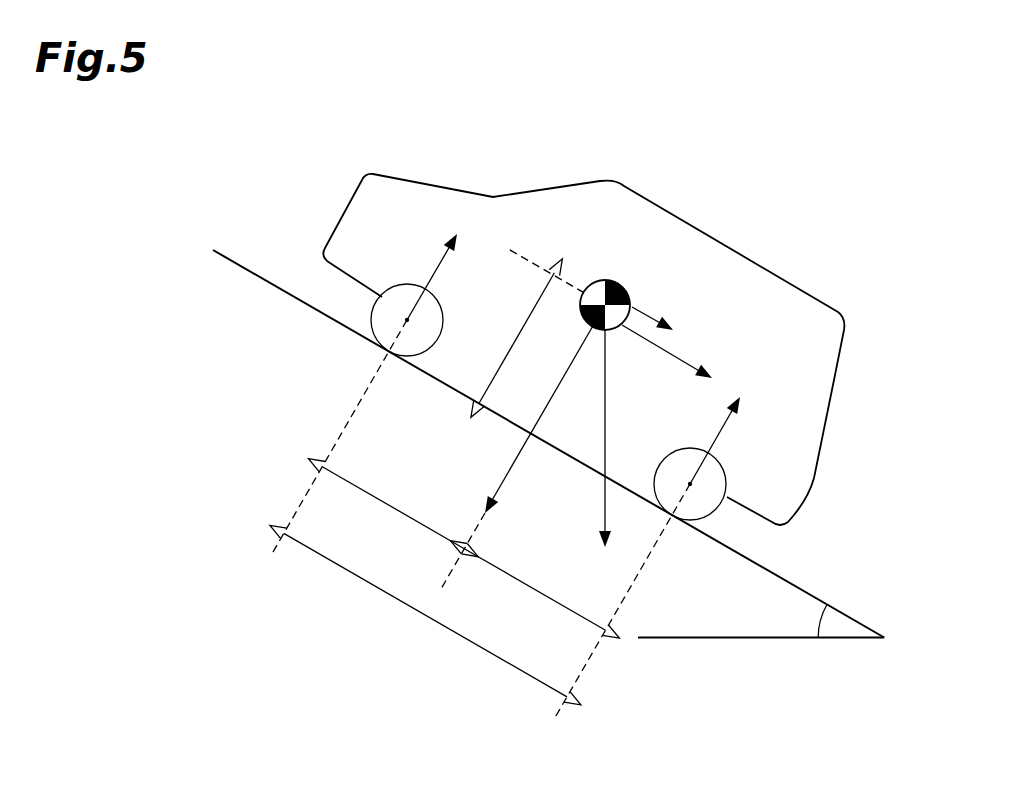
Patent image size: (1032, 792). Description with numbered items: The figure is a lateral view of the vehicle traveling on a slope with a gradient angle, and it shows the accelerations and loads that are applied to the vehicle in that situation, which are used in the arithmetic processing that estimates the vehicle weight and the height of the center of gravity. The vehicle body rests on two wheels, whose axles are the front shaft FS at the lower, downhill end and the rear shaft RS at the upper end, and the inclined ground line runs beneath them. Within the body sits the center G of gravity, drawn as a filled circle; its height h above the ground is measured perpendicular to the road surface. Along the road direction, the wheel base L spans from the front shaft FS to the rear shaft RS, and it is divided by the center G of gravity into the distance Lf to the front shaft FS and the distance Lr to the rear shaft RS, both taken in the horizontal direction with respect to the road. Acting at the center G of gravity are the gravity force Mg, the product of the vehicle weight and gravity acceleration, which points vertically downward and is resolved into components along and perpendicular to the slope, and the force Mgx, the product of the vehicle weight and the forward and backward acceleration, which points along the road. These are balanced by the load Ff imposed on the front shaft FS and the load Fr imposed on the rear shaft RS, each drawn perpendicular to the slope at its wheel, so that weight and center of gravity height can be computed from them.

The front shaft FS is at (407, 320).
The rear shaft RS is at (698, 487).
The center of gravity G is at (602, 281).
The forward and backward inertial force Mgx is at (645, 311).
The gravity force Mg is at (627, 438).
The front shaft load Ff is at (432, 276).
The rear shaft load Fr is at (722, 440).
The height of the center of gravity h is at (517, 338).
The distance between front shaft and center of gravity Lf is at (393, 508).
The distance between rear shaft and center of gravity Lr is at (534, 590).
The wheel base L is at (425, 615).